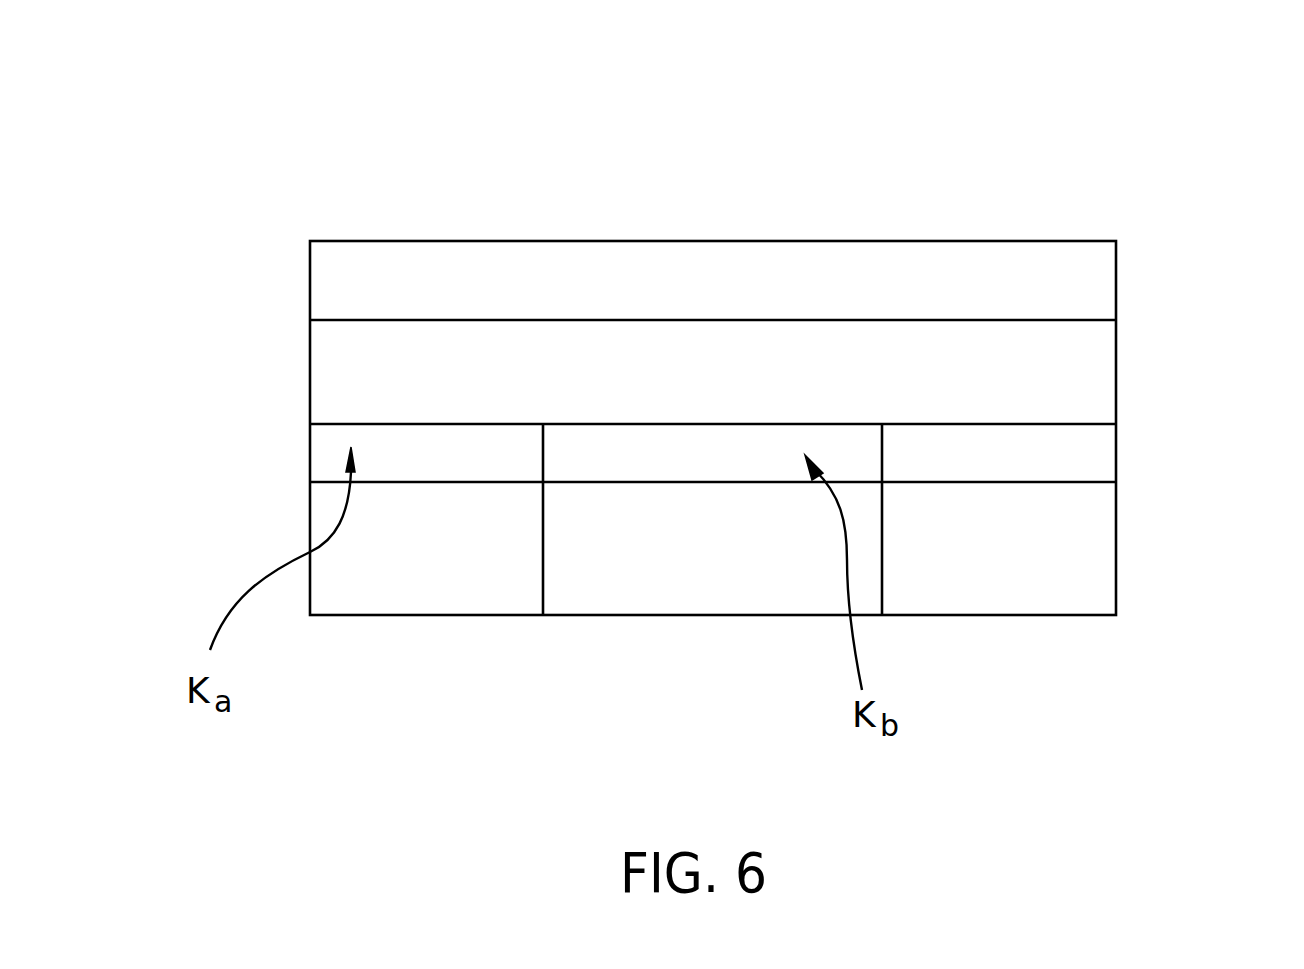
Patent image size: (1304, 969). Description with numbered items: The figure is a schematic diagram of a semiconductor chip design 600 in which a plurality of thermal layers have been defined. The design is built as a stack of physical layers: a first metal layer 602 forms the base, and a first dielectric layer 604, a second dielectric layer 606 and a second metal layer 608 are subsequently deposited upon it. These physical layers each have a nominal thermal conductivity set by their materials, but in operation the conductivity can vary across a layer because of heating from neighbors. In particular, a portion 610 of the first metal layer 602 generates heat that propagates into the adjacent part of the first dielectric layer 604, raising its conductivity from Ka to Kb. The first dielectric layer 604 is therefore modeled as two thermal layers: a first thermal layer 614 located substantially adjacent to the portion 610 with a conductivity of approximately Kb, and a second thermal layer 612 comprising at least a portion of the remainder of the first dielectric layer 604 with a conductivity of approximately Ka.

The semiconductor chip design 600 is at (333, 165).
The first metal layer 602 is at (1132, 482).
The first dielectric layer 604 is at (1132, 482).
The second dielectric layer 606 is at (1132, 424).
The second metal layer 608 is at (1129, 241).
The portion of the first metal layer 610 is at (753, 557).
The second thermal layer 612 is at (453, 471).
The first thermal layer 614 is at (753, 471).